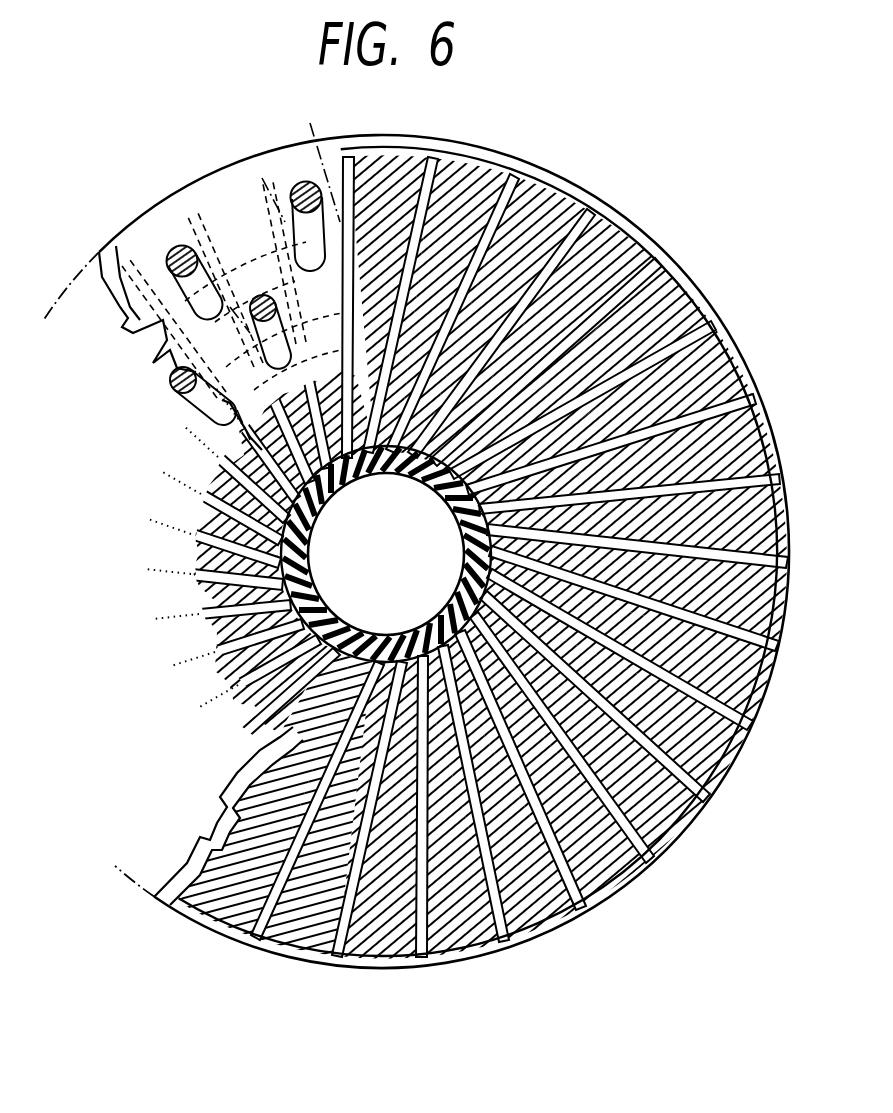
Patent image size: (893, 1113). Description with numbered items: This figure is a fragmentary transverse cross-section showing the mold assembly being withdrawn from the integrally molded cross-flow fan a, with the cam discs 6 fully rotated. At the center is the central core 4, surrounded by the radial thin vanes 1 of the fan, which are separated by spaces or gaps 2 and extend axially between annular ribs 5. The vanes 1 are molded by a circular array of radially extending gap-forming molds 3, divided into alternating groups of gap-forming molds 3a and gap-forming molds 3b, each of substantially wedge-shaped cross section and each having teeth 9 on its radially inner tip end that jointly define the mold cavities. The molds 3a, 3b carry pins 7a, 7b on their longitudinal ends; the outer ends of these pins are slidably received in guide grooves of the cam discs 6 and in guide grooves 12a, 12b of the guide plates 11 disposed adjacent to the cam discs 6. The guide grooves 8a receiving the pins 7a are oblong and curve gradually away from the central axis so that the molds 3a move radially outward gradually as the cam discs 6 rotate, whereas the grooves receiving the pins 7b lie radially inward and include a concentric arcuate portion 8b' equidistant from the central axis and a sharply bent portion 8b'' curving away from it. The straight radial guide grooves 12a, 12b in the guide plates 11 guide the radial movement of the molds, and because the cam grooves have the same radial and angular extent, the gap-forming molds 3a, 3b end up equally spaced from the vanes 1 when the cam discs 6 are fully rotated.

The vanes 1 is at (350, 480).
The gaps 2 is at (397, 470).
The gap-forming molds 3 is at (672, 848).
The gap-forming molds 3a is at (598, 236).
The gap-forming molds 3b is at (668, 298).
The central core 4 is at (223, 620).
The annular ribs 5 is at (318, 620).
The cam discs 6 is at (99, 253).
The pins 7a is at (527, 900).
The pins 7b is at (183, 385).
The guide grooves 8a is at (468, 905).
The concentric arcuate portion 8b' is at (150, 464).
The sharply bent portion 8b'' is at (175, 417).
The teeth 9 is at (210, 578).
The guide plates 11 is at (500, 150).
The guide grooves 12a is at (180, 290).
The guide grooves 12b is at (200, 428).
The cross-flow fan a is at (243, 657).